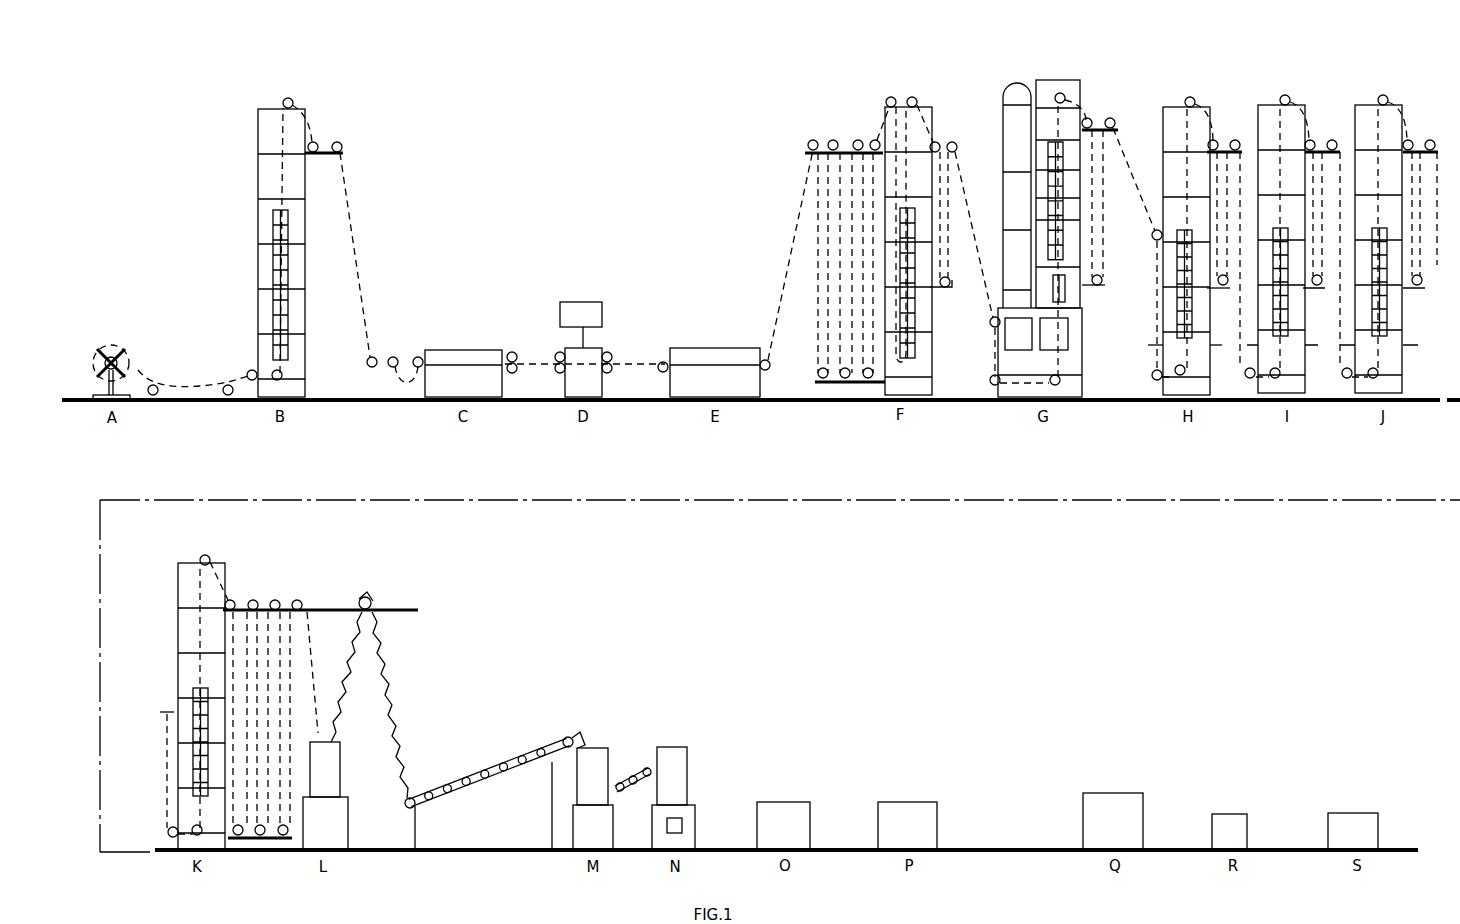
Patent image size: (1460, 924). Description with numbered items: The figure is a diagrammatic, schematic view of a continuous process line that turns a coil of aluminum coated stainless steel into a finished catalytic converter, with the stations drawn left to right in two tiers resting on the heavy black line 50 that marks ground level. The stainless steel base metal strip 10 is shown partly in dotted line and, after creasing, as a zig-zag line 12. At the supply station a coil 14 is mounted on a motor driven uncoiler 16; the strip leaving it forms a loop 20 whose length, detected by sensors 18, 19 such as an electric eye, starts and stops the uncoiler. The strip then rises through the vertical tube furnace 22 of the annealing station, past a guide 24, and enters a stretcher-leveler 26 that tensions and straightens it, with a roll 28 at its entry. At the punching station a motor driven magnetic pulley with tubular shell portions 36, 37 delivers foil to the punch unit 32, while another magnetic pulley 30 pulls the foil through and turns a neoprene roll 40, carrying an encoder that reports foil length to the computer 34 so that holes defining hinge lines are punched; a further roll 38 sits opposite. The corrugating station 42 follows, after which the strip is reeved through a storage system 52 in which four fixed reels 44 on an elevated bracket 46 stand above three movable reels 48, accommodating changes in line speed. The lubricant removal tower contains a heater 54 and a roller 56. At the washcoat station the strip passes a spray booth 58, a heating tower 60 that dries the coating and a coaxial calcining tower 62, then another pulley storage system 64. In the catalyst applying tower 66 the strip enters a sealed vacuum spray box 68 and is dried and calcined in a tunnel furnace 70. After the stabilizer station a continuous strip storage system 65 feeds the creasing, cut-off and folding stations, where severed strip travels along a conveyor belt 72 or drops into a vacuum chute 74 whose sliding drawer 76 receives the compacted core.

The stainless steel base metal strip 10 is at (140, 370).
The zig-zag line 12 is at (388, 690).
The coil 14 is at (113, 346).
The motor driven uncoiler 16 is at (127, 356).
The sensor 18 is at (157, 400).
The sensor 19 is at (228, 402).
The loop 20 is at (182, 376).
The tube furnace 22 is at (262, 225).
The strand loop 24 is at (405, 384).
The stretcher-leveler 26 is at (455, 350).
The guide roller 28 is at (416, 356).
The magnetic pulley 30 is at (516, 352).
The punch unit 32 is at (595, 398).
The computer 34 is at (585, 315).
The magnetic drive pulley shell 36 is at (556, 372).
The magnetic drive pulley shell 37 is at (558, 354).
The roller 38 is at (612, 372).
The neoprene roll 40 is at (611, 353).
The treatment bath 42 is at (715, 350).
The fixed reels 44 is at (875, 143).
The elevated bracket 46 is at (805, 153).
The movable reels 48 is at (866, 393).
The ground level line 50 is at (781, 402).
The storage system 52 is at (808, 262).
The heater 54 is at (916, 317).
The tension roller 56 is at (947, 250).
The spray booth 58 is at (1063, 334).
The heating tower 60 is at (1063, 296).
The calcining tower 62 is at (1063, 198).
The fixed and movable pulley storage system 64 is at (1100, 237).
The continuous strip storage system 65 is at (254, 600).
The tower 66 is at (1166, 96).
The box 68 is at (1200, 350).
The tunnel furnace 70 is at (1198, 300).
The conveyor belt 72 is at (622, 793).
The vacuum chute 74 is at (688, 772).
The sliding drawer 76 is at (683, 826).